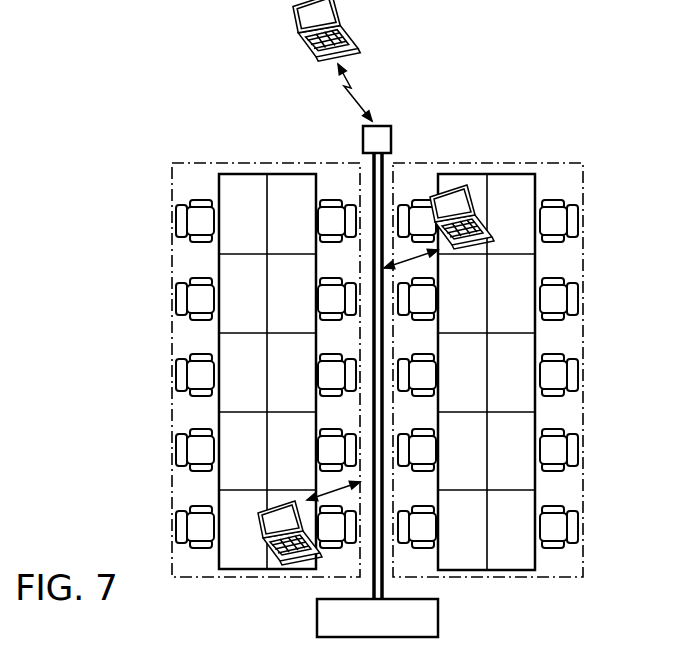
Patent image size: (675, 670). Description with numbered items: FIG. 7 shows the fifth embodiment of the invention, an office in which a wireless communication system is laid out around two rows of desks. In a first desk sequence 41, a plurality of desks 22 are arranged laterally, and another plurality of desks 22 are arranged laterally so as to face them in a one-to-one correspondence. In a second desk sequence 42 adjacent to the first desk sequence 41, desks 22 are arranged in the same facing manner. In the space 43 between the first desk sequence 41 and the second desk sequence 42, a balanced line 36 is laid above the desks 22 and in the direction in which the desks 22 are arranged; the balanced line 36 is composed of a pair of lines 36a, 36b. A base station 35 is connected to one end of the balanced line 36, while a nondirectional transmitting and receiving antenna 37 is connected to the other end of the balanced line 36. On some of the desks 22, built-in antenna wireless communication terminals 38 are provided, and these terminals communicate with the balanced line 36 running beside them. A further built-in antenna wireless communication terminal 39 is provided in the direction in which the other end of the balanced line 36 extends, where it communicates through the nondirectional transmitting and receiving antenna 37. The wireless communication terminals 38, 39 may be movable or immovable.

The desk 22 is at (225, 186).
The base station 35 is at (440, 618).
The balanced line 36 is at (381, 381).
The line 36a is at (372, 588).
The line 36b is at (384, 590).
The nondirectional transmitting and receiving antenna 37 is at (384, 126).
The built-in antenna wireless communication terminal 38 is at (447, 188).
The built-in antenna wireless communication terminal 39 is at (338, 22).
The first desk sequence 41 is at (268, 163).
The second desk sequence 42 is at (486, 163).
The space 43 is at (394, 170).